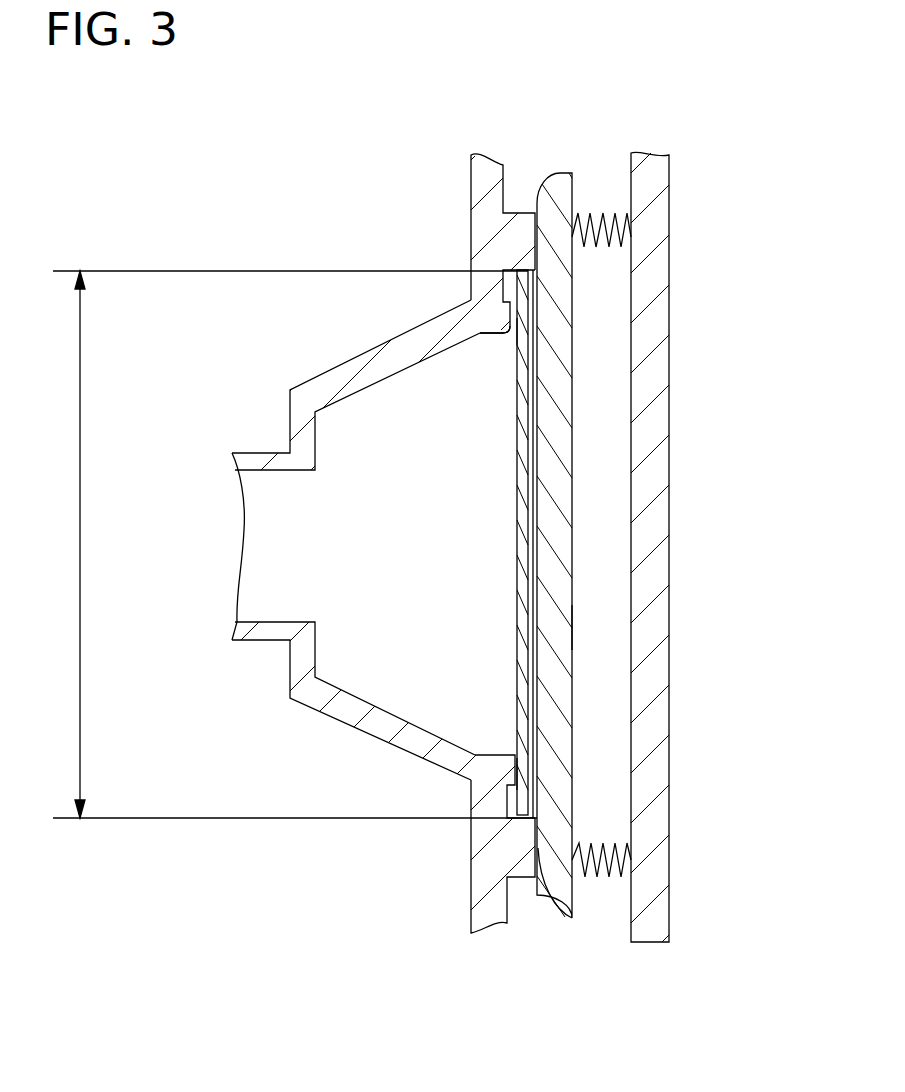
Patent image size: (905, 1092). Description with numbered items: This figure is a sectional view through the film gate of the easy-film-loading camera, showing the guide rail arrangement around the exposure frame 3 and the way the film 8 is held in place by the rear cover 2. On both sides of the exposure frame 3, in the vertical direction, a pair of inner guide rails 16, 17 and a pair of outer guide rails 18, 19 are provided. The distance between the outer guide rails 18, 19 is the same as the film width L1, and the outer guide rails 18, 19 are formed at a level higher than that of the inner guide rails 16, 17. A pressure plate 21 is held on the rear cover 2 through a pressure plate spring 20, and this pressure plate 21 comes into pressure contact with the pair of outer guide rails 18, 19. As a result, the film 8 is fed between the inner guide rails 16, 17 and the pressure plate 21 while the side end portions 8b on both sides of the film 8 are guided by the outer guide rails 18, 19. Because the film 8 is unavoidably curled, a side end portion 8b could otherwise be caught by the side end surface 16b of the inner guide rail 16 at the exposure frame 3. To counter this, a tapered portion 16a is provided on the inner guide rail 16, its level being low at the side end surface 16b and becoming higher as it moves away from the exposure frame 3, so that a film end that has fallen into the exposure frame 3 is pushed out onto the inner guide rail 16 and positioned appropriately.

The rear cover 2 is at (650, 318).
The exposure frame 3 is at (328, 705).
The film 8 is at (518, 514).
The side end portion of the film 8b is at (521, 270).
The inner guide rail 16 is at (514, 312).
The tapered portion 16a is at (517, 330).
The side end surface 16b is at (495, 333).
The inner guide rail 17 is at (518, 772).
The outer guide rail 18 is at (556, 172).
The outer guide rail 19 is at (550, 897).
The pressure plate spring 20 is at (604, 212).
The pressure plate 21 is at (575, 628).
The film width L1 is at (290, 544).